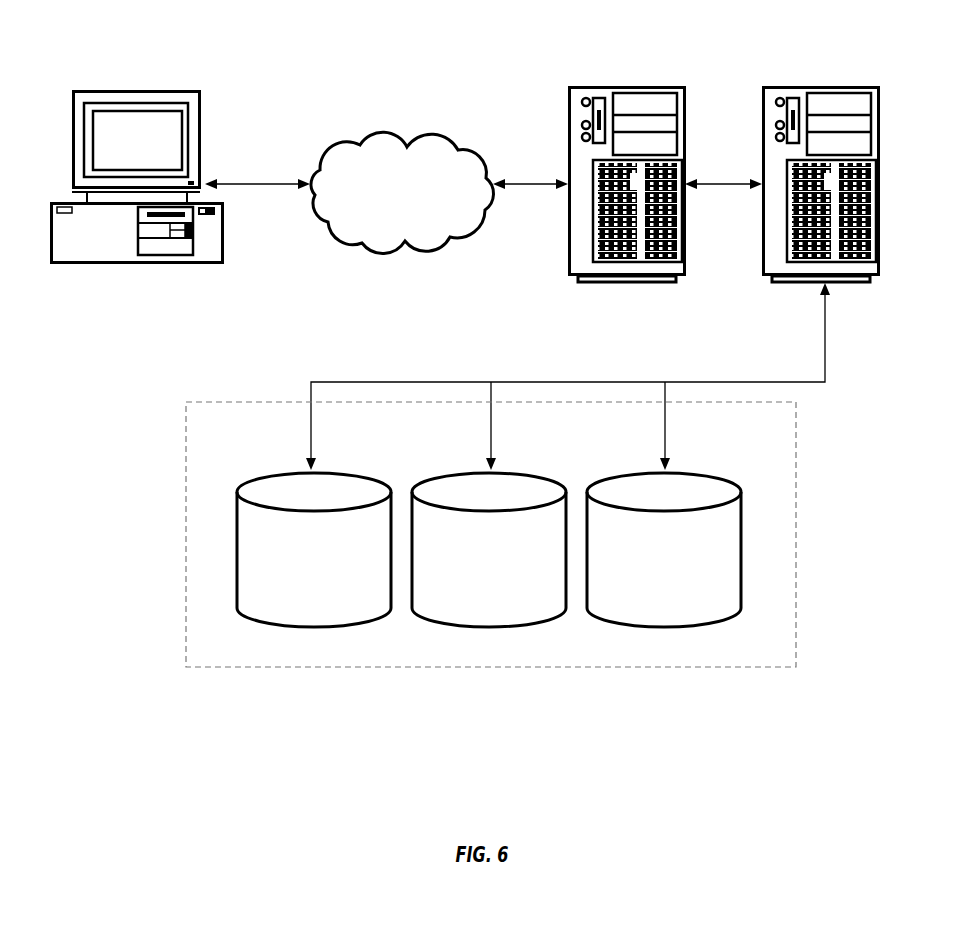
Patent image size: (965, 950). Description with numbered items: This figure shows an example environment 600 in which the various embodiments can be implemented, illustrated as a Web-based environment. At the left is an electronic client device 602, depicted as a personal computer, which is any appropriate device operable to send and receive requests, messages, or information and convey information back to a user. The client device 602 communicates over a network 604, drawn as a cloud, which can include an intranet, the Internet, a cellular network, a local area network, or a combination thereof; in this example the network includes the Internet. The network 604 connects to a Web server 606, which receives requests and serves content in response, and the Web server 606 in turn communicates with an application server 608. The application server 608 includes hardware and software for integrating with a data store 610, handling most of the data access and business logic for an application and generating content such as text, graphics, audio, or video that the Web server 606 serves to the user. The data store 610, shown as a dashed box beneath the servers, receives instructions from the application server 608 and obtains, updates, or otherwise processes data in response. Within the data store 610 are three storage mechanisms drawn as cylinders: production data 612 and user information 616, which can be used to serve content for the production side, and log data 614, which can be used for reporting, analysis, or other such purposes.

The environment 600 is at (950, 372).
The electronic client device 602 is at (166, 90).
The network 604 is at (423, 118).
The Web server 606 is at (567, 253).
The application server 608 is at (758, 262).
The data store 610 is at (222, 668).
The production data 612 is at (335, 627).
The log data 614 is at (490, 628).
The user information 616 is at (687, 628).